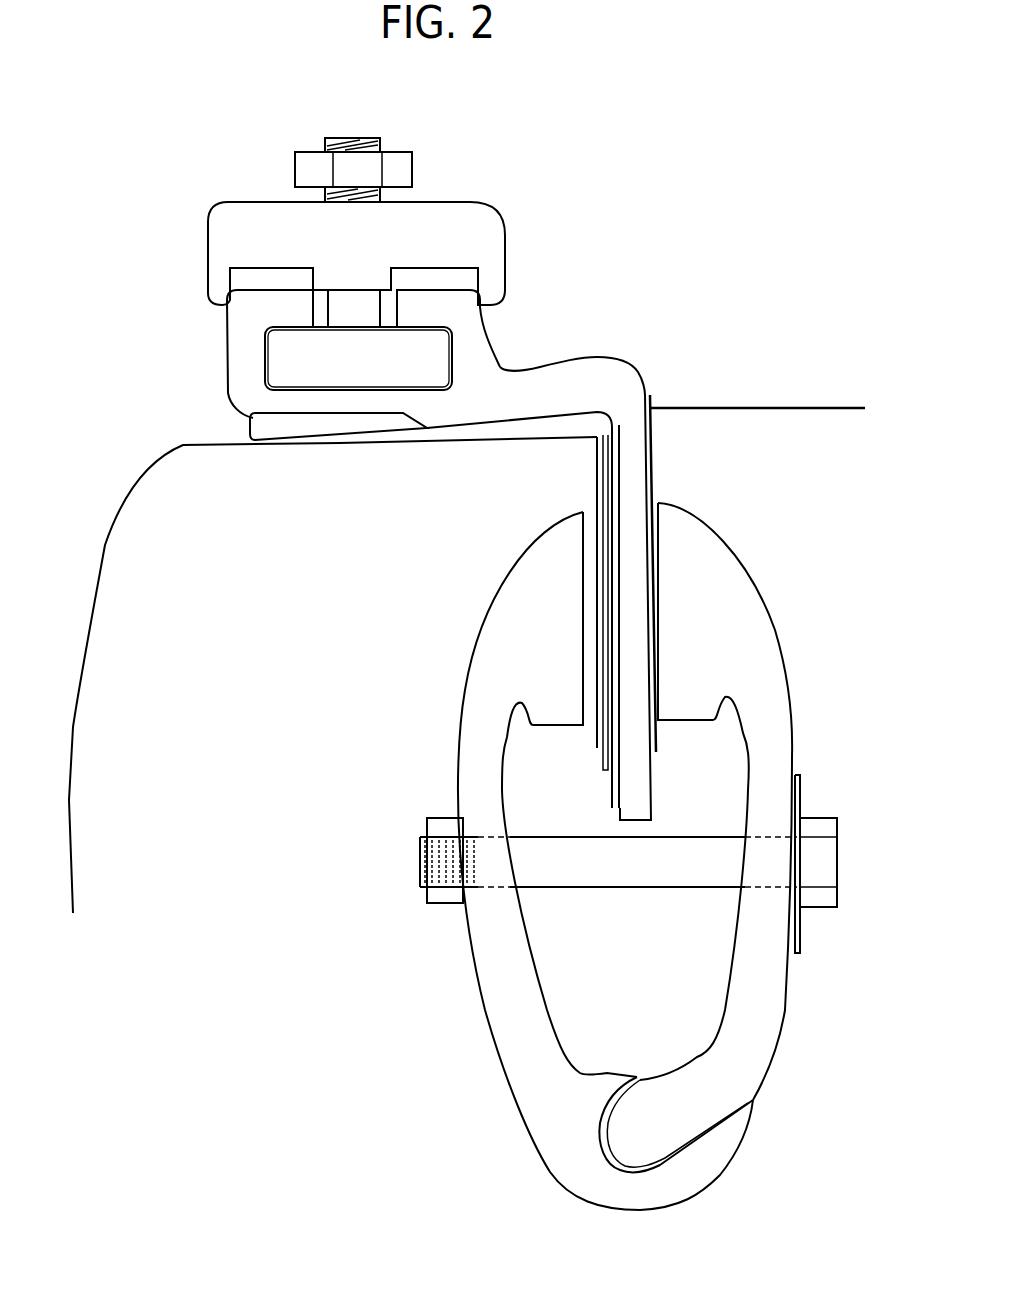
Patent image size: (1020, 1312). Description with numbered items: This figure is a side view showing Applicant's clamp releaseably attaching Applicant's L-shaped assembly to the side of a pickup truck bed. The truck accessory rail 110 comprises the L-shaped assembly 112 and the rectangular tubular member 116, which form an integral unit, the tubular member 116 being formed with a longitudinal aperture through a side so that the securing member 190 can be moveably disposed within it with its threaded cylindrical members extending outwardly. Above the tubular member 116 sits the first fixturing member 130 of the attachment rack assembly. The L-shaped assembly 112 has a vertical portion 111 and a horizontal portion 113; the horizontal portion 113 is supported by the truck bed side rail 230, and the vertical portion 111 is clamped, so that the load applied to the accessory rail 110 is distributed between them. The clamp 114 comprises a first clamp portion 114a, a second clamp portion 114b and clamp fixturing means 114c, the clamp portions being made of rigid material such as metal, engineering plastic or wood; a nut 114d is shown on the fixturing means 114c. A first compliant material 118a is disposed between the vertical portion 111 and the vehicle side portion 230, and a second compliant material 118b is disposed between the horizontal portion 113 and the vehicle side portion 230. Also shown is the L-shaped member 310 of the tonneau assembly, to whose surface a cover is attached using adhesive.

The truck accessory rail 110 is at (614, 305).
The vertical portion 111 is at (633, 467).
The L-shaped assembly 112 is at (670, 452).
The horizontal portion 113 is at (470, 402).
The clamp 114 is at (792, 622).
The first clamp portion 114a is at (793, 756).
The second clamp portion 114b is at (460, 743).
The clamp fixturing means 114c is at (627, 880).
The nut 114d is at (437, 897).
The rectangular tubular member 116 is at (210, 351).
The first compliant material 118a is at (603, 748).
The second compliant material 118b is at (277, 428).
The first fixturing member 130 is at (460, 198).
The securing member 190 is at (373, 371).
The truck bed side rail 230 is at (95, 540).
The L-shaped member 310 is at (849, 425).